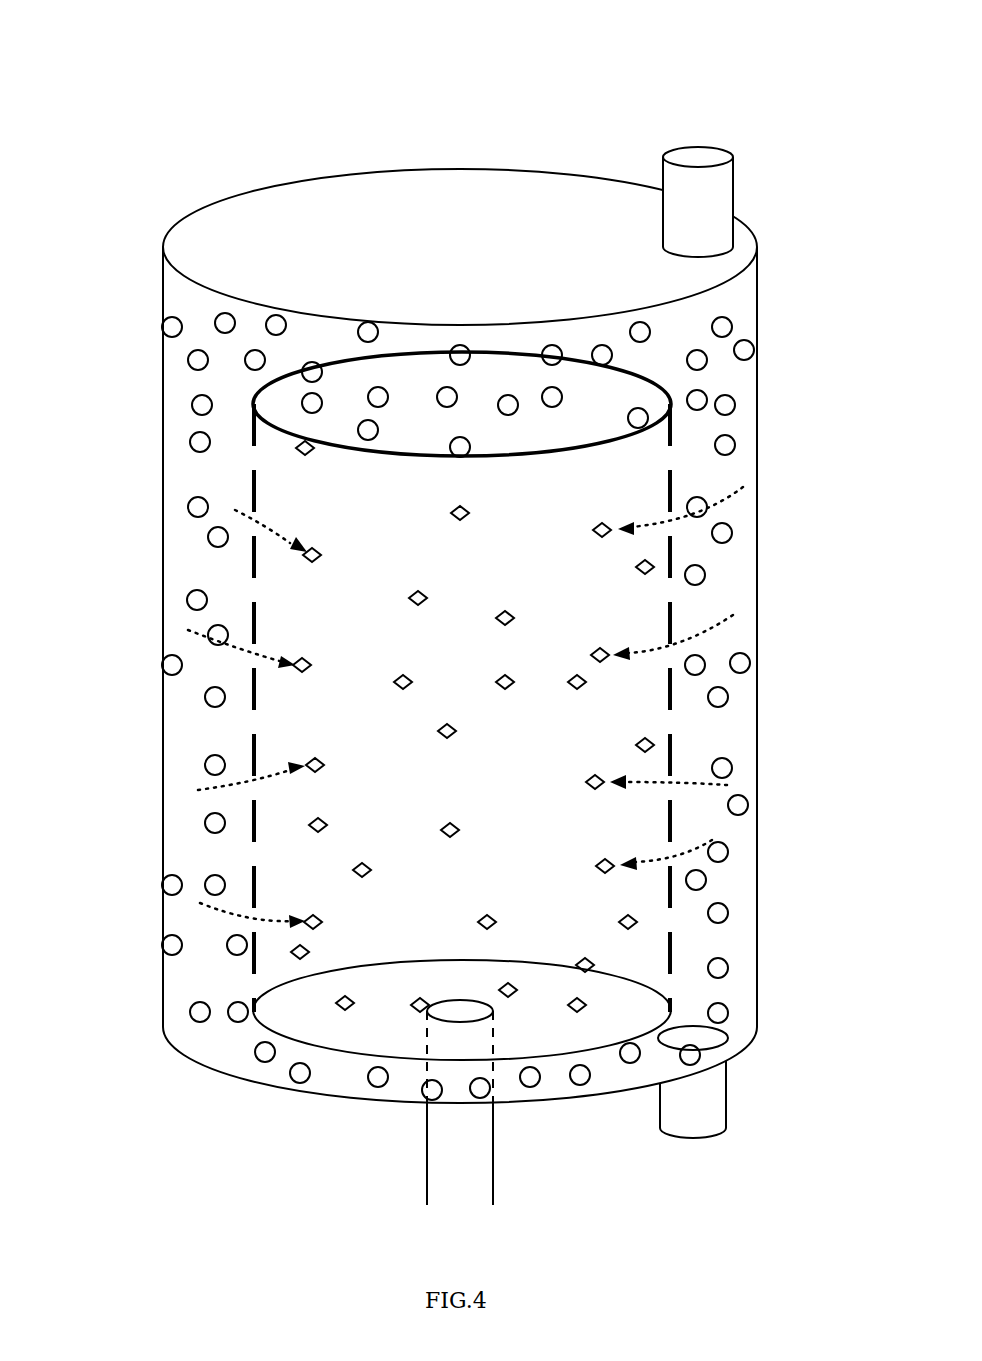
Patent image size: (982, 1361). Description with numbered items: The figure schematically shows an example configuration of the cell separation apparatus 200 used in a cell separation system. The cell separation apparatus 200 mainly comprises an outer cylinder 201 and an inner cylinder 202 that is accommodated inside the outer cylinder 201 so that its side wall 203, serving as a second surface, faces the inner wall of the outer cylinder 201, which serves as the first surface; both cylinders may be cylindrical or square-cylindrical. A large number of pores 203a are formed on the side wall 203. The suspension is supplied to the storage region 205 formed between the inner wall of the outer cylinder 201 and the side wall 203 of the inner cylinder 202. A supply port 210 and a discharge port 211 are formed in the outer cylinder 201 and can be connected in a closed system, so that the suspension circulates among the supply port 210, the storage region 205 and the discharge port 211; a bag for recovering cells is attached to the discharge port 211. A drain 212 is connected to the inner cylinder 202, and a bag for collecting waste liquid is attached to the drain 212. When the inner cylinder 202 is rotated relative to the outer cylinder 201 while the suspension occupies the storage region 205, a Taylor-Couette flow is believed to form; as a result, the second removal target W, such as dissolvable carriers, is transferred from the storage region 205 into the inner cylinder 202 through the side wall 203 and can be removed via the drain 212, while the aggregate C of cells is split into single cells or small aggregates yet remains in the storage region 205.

The cell separation apparatus 200 is at (475, 97).
The outer cylinder 201 is at (238, 197).
The inner cylinder 202 is at (578, 413).
The side wall 203 is at (672, 615).
The pores 203a is at (668, 715).
The storage region 205 is at (192, 567).
The supply port 210 is at (735, 222).
The discharge port 211 is at (731, 1118).
The drain 212 is at (426, 1163).
The aggregate of cells C is at (204, 766).
The second removal target W is at (292, 953).